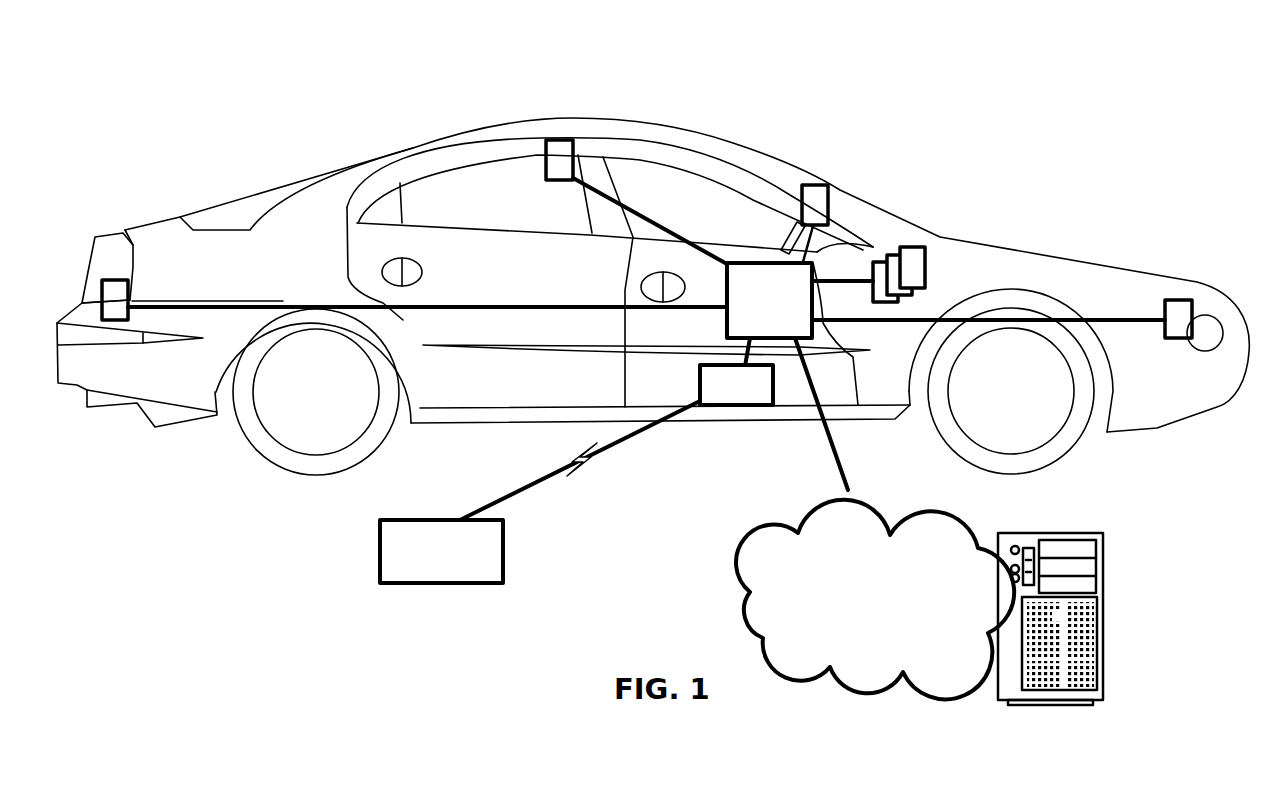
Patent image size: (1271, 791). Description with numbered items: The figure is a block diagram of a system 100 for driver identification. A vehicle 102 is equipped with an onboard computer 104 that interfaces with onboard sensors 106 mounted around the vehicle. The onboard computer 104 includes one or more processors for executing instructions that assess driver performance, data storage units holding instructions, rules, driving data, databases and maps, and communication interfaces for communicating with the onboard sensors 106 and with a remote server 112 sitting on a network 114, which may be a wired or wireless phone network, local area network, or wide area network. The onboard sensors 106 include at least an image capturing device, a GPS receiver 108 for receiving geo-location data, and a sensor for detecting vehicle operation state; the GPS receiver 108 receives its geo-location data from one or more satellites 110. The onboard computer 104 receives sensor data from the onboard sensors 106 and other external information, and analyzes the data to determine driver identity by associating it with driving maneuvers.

The vehicle system 100 is at (1046, 92).
The vehicle 102 is at (733, 146).
The onboard computer 104 is at (646, 334).
The onboard sensors 106 is at (135, 280).
The GPS receiver 108 is at (718, 400).
The satellites 110 is at (380, 540).
The remote server 112 is at (1103, 567).
The network 114 is at (875, 600).